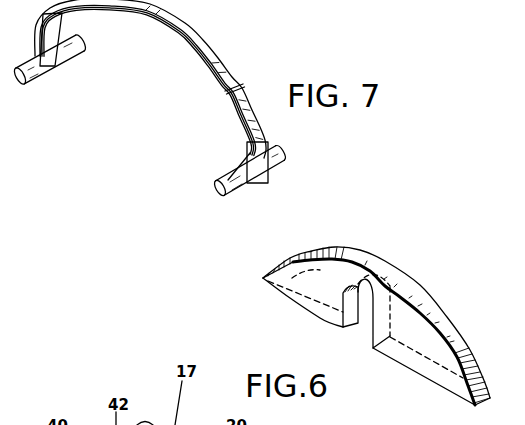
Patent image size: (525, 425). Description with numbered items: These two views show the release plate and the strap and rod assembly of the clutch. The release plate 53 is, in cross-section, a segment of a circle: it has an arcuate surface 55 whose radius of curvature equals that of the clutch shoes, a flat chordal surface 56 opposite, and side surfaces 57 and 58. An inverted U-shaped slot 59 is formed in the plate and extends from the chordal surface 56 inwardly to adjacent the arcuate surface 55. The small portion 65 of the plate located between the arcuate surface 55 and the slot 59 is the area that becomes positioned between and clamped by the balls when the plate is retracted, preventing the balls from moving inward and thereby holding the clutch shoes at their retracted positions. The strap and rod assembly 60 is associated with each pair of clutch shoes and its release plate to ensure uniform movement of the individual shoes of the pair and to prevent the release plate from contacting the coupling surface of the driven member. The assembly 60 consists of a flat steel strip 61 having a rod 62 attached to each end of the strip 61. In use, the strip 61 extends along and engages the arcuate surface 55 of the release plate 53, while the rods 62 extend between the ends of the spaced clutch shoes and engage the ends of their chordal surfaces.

In FIG. 6, the release plate 53 is at (418, 284).
In FIG. 6, the arcuate surface 55 is at (448, 312).
In FIG. 6, the flat chordal surface 56 is at (417, 372).
In FIG. 6, the side surface 57 is at (320, 272).
In FIG. 6, the side surface 58 is at (352, 261).
In FIG. 6, the inverted U-shaped slot 59 is at (344, 319).
In FIG. 6, the small portion 65 is at (378, 285).
In FIG. 7, the strap and rod assembly 60 is at (188, 24).
In FIG. 7, the flat steel strip 61 is at (155, 14).
In FIG. 7, the rod 62 is at (20, 79).